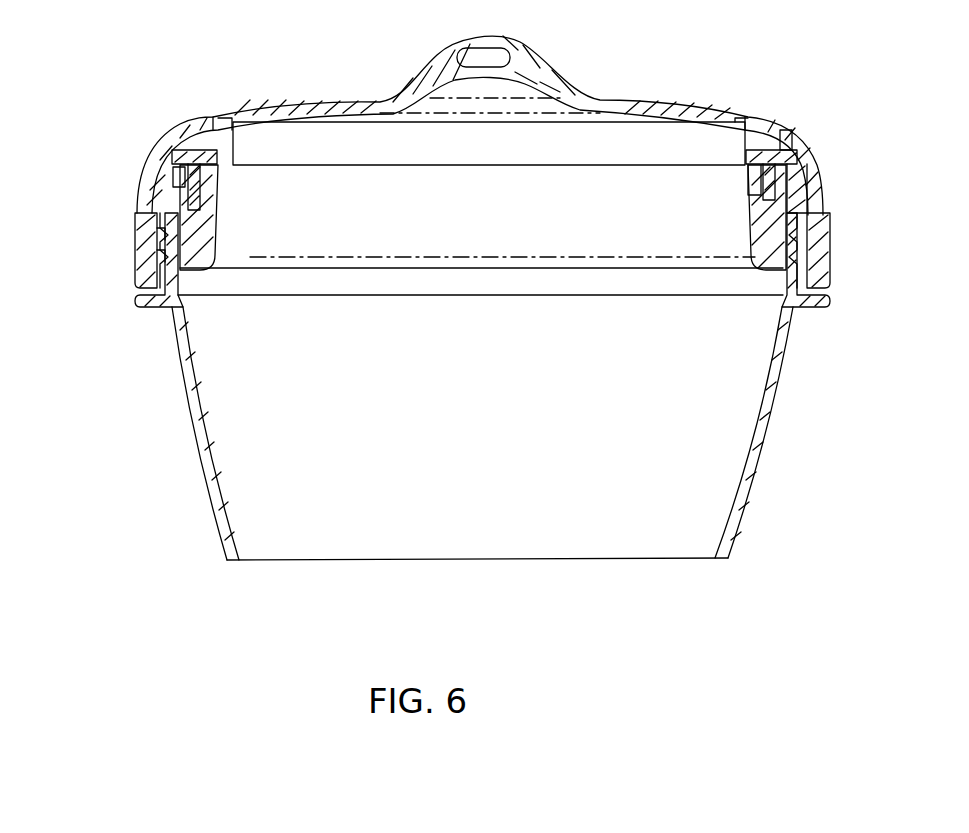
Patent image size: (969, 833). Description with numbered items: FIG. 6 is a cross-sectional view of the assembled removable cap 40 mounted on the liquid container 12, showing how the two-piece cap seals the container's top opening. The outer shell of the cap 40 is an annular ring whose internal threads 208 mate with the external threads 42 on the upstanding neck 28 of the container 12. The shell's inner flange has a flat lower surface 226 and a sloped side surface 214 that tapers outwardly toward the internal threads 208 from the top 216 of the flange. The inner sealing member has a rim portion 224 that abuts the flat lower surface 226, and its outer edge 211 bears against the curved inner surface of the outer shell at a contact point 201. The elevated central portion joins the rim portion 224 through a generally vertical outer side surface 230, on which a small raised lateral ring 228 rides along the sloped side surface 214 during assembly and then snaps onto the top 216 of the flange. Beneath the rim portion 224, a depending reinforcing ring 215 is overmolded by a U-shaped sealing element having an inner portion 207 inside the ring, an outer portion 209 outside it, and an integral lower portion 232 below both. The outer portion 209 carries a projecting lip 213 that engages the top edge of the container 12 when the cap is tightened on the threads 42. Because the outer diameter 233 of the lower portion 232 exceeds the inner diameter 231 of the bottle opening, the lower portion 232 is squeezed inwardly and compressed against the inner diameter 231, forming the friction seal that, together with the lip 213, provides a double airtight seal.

The liquid container 12 is at (752, 443).
The upstanding neck 28 is at (150, 293).
The removable cap 40 is at (872, 146).
The external threads 42 is at (168, 268).
The contact point 201 is at (167, 150).
The inner portion 207 is at (753, 183).
The internal threads 208 is at (800, 263).
The outer portion 209 is at (793, 193).
The outer edge 211 is at (162, 173).
The projecting lip 213 is at (133, 223).
The sloped side surface 214 is at (217, 143).
The reinforcing ring 215 is at (767, 193).
The top of the flange 216 is at (213, 117).
The rim portion 224 is at (187, 147).
The flat lower surface 226 is at (217, 165).
The raised lateral ring 228 is at (747, 123).
The outer side surface 230 is at (753, 117).
The inner diameter 231 is at (180, 242).
The lower portion 232 is at (783, 237).
The outer diameter 233 is at (157, 240).